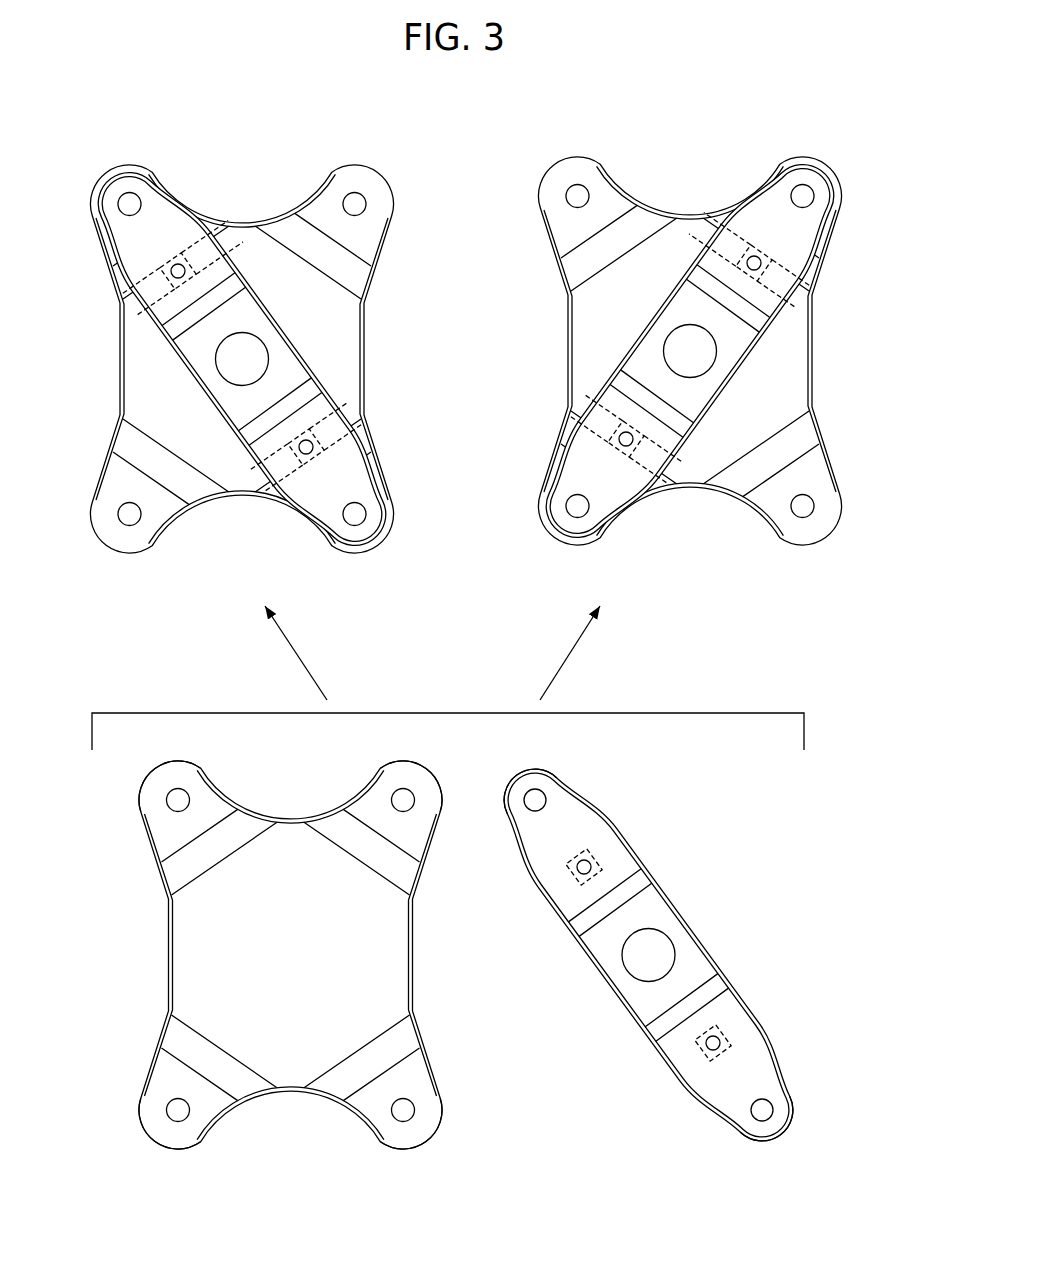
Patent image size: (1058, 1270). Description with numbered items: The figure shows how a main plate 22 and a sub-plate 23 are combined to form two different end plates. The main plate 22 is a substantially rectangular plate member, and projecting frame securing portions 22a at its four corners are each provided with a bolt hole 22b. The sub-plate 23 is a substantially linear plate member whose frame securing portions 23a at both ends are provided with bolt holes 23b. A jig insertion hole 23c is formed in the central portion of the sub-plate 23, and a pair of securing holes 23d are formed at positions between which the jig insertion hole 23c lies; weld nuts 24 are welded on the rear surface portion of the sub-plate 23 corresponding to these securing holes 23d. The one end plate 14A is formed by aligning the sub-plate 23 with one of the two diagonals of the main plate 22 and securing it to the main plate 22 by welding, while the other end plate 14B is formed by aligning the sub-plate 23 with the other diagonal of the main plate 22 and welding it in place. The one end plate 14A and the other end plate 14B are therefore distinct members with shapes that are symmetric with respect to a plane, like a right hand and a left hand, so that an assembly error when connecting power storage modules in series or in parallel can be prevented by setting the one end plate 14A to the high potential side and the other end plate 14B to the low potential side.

The one end plate 14A is at (257, 188).
The other end plate 14B is at (673, 195).
The main plate 22 is at (369, 339).
The frame securing portion 22a is at (364, 180).
The bolt hole 22b is at (360, 198).
The sub-plate 23 is at (329, 387).
The frame securing portion 23a is at (117, 187).
The bolt hole 23b is at (131, 193).
The jig insertion hole 23c is at (258, 338).
The securing hole 23d is at (172, 278).
The weld nut 24 is at (200, 248).